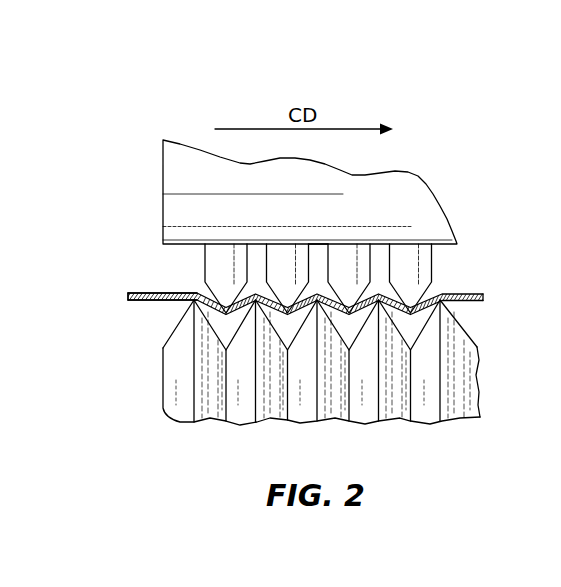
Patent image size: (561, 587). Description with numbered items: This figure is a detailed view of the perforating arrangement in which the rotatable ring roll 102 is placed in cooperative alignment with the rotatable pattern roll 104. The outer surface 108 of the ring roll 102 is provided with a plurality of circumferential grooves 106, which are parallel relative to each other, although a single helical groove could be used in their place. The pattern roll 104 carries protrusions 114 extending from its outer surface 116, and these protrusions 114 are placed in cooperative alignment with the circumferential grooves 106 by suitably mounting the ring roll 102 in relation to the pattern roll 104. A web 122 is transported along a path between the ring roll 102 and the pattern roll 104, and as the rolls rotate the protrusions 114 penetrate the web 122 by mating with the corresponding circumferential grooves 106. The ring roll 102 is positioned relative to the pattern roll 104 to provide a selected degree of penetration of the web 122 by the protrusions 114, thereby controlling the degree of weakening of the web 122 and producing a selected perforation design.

The rotatable ring roll 102 is at (319, 386).
The rotatable pattern roll 104 is at (412, 190).
The circumferential grooves 106 is at (220, 323).
The outer surface 108 is at (430, 297).
The protrusions 114 is at (282, 257).
The outer surface 116 is at (318, 245).
The web 122 is at (167, 291).